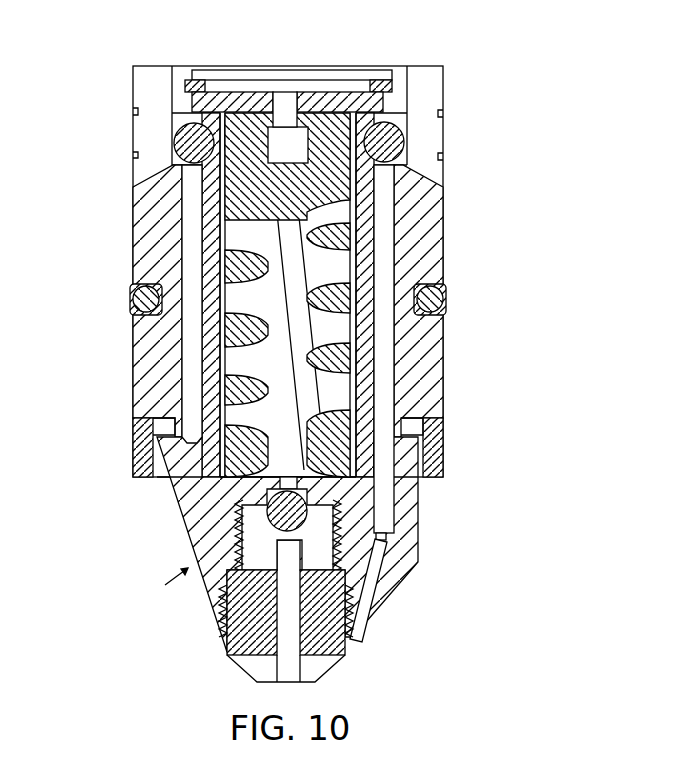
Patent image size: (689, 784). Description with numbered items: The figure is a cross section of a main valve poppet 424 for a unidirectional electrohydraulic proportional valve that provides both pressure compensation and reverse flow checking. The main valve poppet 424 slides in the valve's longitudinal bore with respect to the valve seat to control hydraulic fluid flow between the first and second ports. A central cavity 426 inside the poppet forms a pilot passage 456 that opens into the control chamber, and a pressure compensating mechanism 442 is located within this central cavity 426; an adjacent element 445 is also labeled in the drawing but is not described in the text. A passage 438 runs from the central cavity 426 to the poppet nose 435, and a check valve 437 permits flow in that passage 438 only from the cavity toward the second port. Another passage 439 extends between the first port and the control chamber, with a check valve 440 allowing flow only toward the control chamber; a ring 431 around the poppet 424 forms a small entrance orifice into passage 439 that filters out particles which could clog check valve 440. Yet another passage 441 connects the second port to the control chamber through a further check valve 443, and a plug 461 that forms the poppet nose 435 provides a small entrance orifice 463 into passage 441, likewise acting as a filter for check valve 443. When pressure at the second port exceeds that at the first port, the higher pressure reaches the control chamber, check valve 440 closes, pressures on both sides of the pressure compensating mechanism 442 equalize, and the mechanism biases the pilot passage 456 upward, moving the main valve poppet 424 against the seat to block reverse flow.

The main valve poppet 424 is at (157, 582).
The central cavity 426 is at (221, 243).
The ring 431 is at (133, 443).
The poppet nose 435 is at (247, 670).
The check valve 437 is at (307, 507).
The passage 438 is at (275, 487).
The passage 439 is at (187, 353).
The check valve 440 is at (186, 142).
The passage 441 is at (387, 217).
The pressure compensating mechanism 442 is at (247, 202).
The check valve 443 is at (393, 143).
The bearing 445 is at (222, 333).
The pilot passage 456 is at (291, 103).
The plug 461 is at (327, 657).
The entrance orifice 463 is at (353, 640).